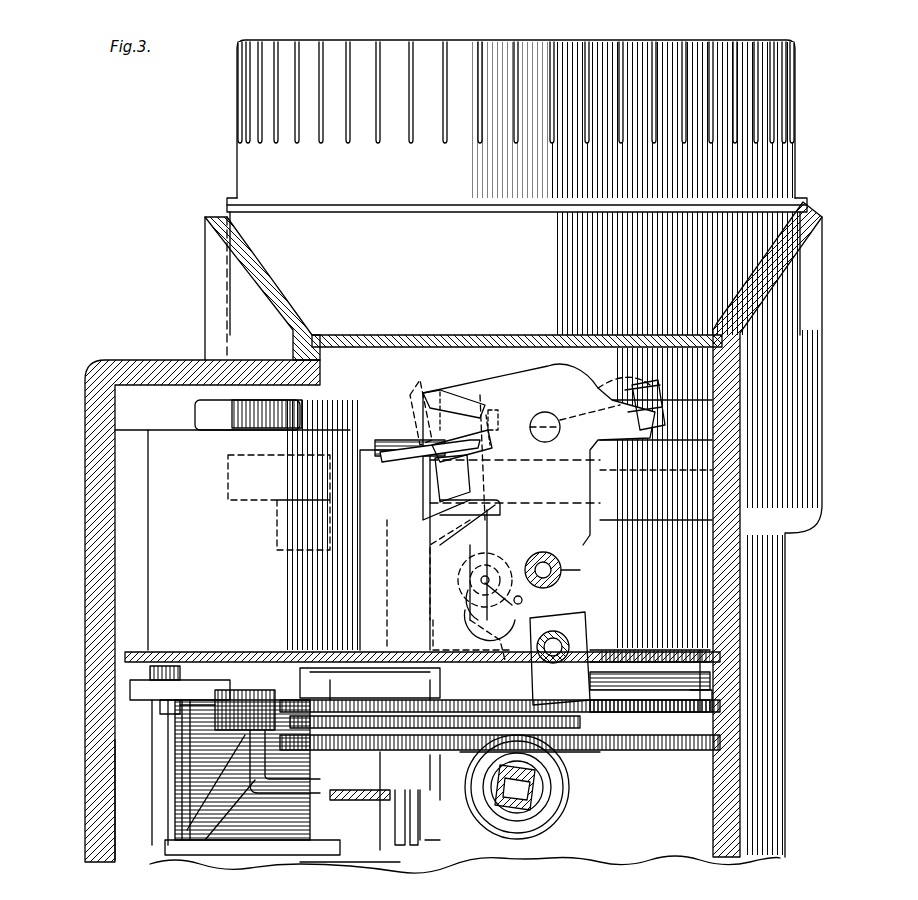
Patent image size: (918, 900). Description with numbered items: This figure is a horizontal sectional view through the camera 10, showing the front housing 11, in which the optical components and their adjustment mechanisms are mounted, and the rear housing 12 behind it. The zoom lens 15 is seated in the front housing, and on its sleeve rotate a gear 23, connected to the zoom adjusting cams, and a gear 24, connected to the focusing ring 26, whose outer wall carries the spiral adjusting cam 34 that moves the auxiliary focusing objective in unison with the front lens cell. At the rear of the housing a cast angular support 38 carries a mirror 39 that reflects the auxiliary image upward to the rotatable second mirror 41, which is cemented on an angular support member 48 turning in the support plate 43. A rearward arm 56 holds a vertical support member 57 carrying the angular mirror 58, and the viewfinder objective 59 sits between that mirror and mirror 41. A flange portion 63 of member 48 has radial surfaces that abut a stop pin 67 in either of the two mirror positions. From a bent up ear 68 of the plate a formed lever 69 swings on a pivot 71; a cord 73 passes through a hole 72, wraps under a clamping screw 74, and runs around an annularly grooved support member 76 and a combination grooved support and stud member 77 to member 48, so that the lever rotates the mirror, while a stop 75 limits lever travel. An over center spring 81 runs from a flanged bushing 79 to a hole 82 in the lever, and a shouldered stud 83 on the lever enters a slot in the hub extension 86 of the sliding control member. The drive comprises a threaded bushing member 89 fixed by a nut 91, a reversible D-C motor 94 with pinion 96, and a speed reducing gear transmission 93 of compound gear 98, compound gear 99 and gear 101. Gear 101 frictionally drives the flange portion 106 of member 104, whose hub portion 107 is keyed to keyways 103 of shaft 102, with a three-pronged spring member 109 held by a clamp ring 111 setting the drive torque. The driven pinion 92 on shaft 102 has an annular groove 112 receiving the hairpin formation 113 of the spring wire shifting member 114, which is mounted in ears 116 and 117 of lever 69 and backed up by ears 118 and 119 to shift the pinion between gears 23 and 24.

The camera 10 is at (162, 358).
The front housing 11 is at (112, 442).
The rear housing 12 is at (110, 735).
The zoom lens 15 is at (232, 176).
The gear 23 is at (612, 520).
The gear 24 is at (720, 425).
The focusing ring 26 is at (800, 166).
The spiral adjusting cam 34 is at (350, 881).
The cast angular support 38 is at (165, 748).
The mirror 39 is at (250, 842).
The rotatable second mirror 41 is at (200, 795).
The support plate 43 is at (177, 652).
The angular support member 48 is at (195, 745).
The arm 56 is at (560, 805).
The vertical support member 57 is at (520, 808).
The angular mirror 58 is at (510, 805).
The viewfinder objective 59 is at (375, 845).
The flange portion 63 is at (140, 690).
The stop pin 67 is at (160, 708).
The bent up ear 68 is at (482, 543).
The formed lever 69 is at (498, 400).
The pivot 71 is at (562, 430).
The hole 72 is at (660, 698).
The cord 73 is at (668, 700).
The clamping screw 74 is at (556, 632).
The stop 75 is at (600, 655).
The annularly grooved support member 76 is at (690, 715).
The combination annularly grooved support and stud member 77 is at (480, 640).
The flanged bushing 79 is at (455, 580).
The over center spring 81 is at (458, 610).
The hole 82 is at (524, 602).
The shouldered stud 83 is at (548, 560).
The hub extension 86 is at (585, 567).
The externally threaded bushing member 89 is at (358, 595).
The nut 91 is at (360, 685).
The driven pinion 92 is at (480, 478).
The power driven speed reducing gear transmission 93 is at (245, 745).
The reversible D-C motor 94 is at (150, 555).
The pinion 96 is at (247, 736).
The compound gear 98 is at (375, 727).
The compound gear 99 is at (590, 755).
The gear 101 is at (367, 817).
The shaft 102 is at (440, 819).
The keyways 103 is at (443, 851).
The member 104 is at (380, 797).
The flange portion 106 is at (305, 740).
The hub portion 107 is at (478, 805).
The three-pronged spring member 109 is at (480, 795).
The clamp ring 111 is at (392, 830).
The annular groove 112 is at (395, 445).
The hairpin formation 113 is at (398, 445).
The spring wire shifting member 114 is at (478, 395).
The ear 116 is at (500, 445).
The ear 117 is at (600, 386).
The ear 118 is at (428, 390).
The ear 119 is at (466, 522).